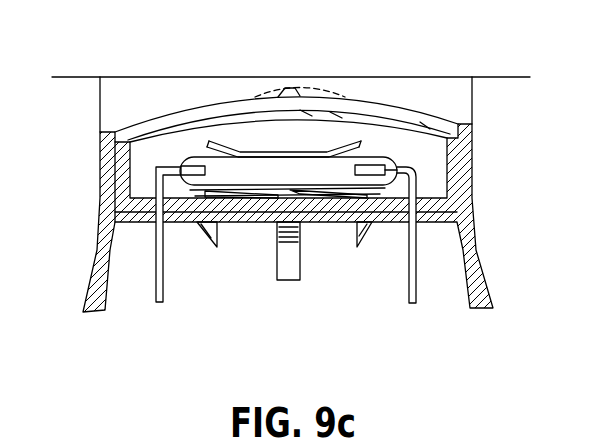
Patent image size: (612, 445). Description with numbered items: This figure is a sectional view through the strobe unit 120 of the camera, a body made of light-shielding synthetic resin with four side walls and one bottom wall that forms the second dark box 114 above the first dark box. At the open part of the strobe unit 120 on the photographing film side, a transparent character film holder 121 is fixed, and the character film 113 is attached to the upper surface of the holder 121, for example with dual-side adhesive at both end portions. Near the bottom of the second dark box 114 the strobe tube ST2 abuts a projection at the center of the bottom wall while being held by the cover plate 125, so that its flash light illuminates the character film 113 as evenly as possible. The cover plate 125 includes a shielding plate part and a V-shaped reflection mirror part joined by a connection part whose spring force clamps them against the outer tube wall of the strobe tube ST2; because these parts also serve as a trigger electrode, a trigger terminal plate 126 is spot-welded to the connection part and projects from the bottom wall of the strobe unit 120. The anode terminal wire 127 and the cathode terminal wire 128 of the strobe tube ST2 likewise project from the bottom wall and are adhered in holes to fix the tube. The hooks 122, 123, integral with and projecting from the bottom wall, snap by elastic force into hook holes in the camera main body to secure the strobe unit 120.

The strobe tube ST2 is at (217, 170).
The character film 113 is at (352, 107).
The second dark box 114 is at (433, 165).
The strobe unit 120 is at (120, 177).
The character film holder 121 is at (413, 128).
The hook 122 is at (203, 236).
The hook 123 is at (361, 237).
The cover plate 125 is at (260, 141).
The trigger terminal plate 126 is at (289, 275).
The anode terminal wire 127 is at (152, 273).
The cathode terminal wire 128 is at (421, 273).